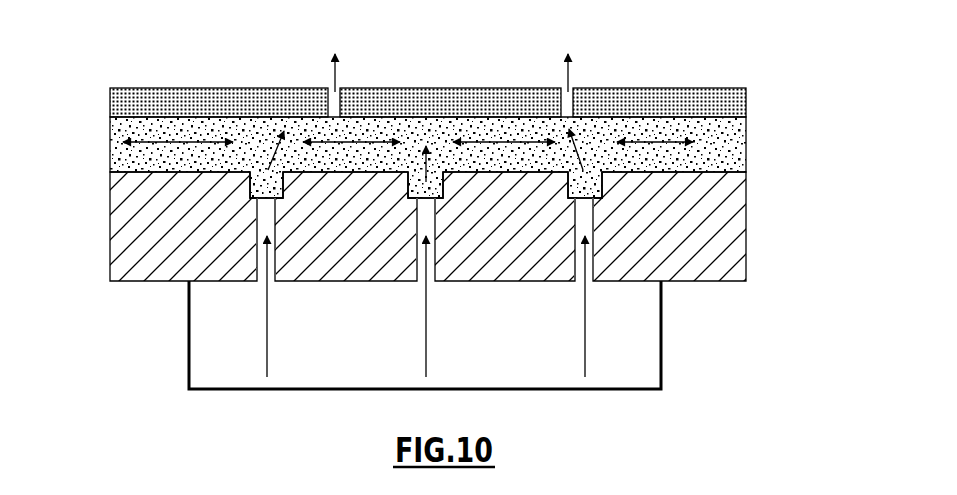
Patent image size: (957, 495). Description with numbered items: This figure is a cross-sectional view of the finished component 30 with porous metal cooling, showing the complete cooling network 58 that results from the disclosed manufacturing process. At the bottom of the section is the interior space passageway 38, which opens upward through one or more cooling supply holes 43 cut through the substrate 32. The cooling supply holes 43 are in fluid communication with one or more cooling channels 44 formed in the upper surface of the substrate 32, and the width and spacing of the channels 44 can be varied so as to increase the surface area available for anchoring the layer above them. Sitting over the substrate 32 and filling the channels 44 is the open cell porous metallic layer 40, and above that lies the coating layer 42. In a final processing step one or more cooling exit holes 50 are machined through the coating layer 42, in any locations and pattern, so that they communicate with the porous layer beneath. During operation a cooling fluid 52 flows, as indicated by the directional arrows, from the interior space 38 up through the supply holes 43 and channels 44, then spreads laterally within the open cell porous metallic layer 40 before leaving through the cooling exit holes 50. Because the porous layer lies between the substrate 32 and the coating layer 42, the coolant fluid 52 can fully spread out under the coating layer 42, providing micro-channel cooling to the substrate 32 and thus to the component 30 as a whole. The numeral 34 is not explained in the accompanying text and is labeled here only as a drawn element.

The component 30 is at (79, 67).
The substrate 32 is at (705, 235).
The porous distribution layer 34 is at (130, 170).
The interior space passageway 38 is at (635, 333).
The open cell porous metallic layer 40 is at (247, 132).
The coating layer 42 is at (161, 112).
The cooling supply holes 43 is at (268, 222).
The cooling channels 44 is at (258, 185).
The cooling exit holes 50 is at (570, 73).
The cooling fluid 52 is at (338, 73).
The cooling network 58 is at (769, 90).